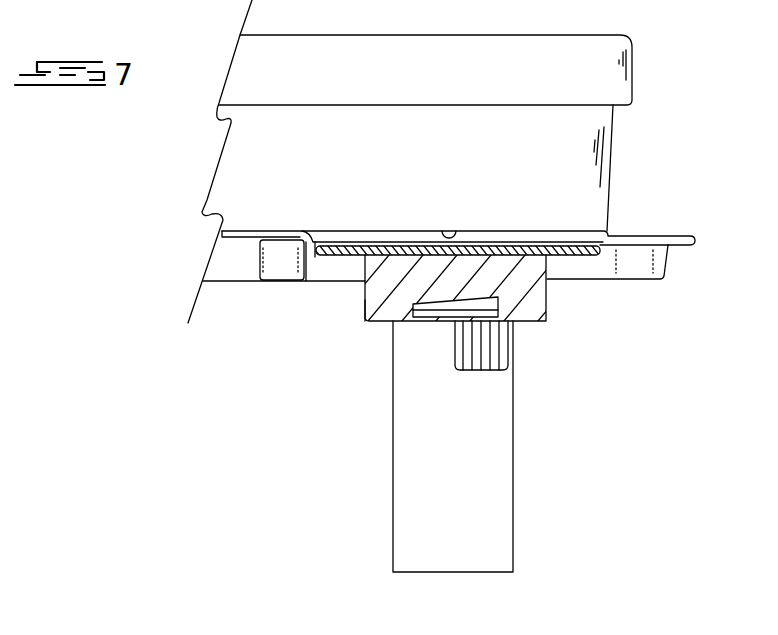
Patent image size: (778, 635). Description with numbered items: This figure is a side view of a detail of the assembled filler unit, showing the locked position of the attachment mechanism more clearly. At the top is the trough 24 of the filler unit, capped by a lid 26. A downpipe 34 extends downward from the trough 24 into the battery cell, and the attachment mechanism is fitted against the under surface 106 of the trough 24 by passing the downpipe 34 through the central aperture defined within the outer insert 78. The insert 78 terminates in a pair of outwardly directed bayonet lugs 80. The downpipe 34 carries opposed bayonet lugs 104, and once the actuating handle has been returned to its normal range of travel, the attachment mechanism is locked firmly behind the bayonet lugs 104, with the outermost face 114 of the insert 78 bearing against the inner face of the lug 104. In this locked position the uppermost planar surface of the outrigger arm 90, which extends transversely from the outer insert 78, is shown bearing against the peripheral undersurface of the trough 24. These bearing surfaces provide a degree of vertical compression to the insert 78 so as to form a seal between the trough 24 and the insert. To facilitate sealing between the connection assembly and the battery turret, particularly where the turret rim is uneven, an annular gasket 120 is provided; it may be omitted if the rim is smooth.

The trough 24 is at (611, 178).
The lid 26 is at (632, 78).
The downpipe 34 is at (513, 478).
The outer insert 78 is at (535, 297).
The bayonet lug 80 is at (427, 323).
The outrigger arm 90 is at (515, 240).
The bayonet lug 104 is at (493, 353).
The under surface 106 is at (452, 232).
The outermost face 114 is at (377, 322).
The annular gasket 120 is at (345, 257).